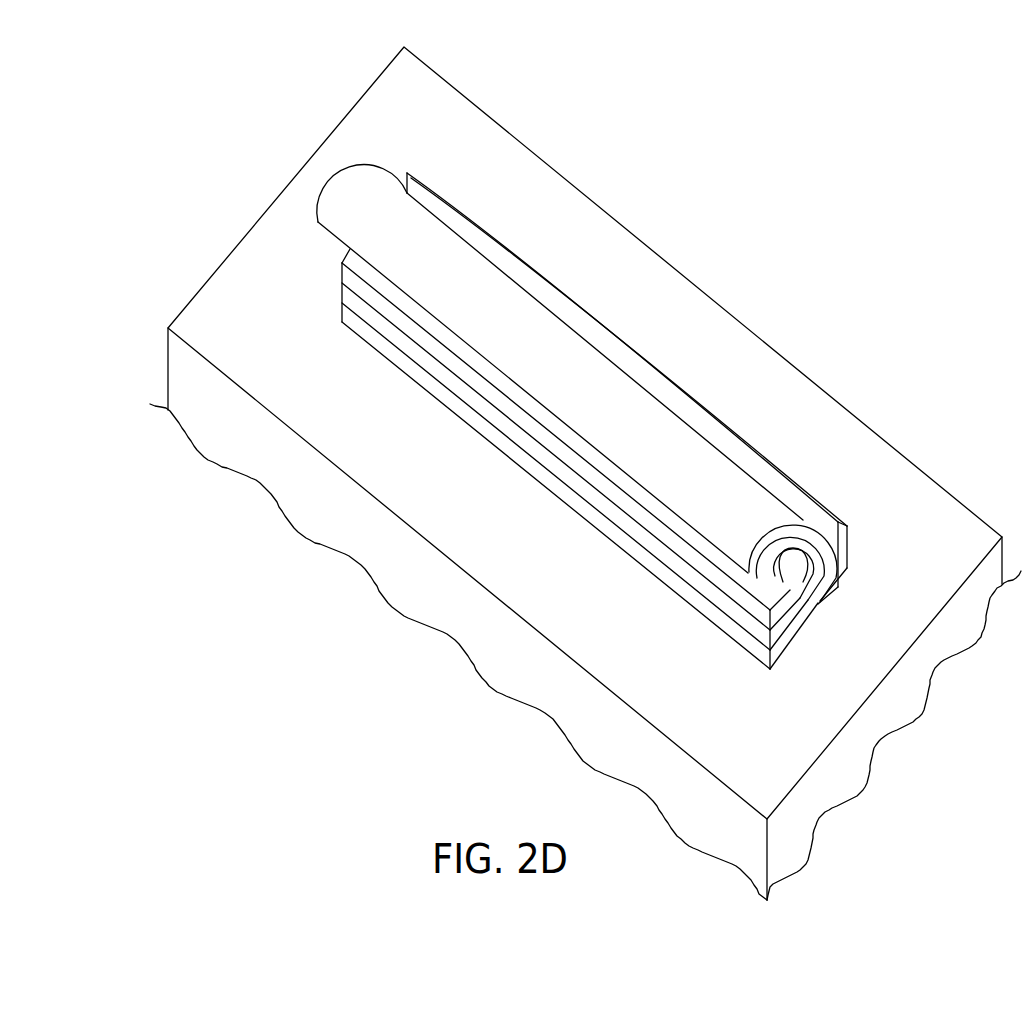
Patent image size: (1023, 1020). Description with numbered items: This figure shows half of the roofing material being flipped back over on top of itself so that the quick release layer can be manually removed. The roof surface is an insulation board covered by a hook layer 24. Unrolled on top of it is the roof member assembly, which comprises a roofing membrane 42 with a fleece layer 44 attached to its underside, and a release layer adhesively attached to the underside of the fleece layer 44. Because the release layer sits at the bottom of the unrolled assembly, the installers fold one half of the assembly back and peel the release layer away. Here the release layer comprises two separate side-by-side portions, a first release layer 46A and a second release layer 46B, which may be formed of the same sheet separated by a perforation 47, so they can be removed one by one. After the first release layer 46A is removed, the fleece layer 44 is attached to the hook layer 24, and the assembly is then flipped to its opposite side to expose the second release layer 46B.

The hook layer 24 is at (883, 493).
The fleece layer 44 is at (602, 387).
The first release layer 46A is at (718, 418).
The second release layer 46B is at (800, 632).
The perforation 47 is at (817, 603).
The roofing membrane 42 is at (783, 580).